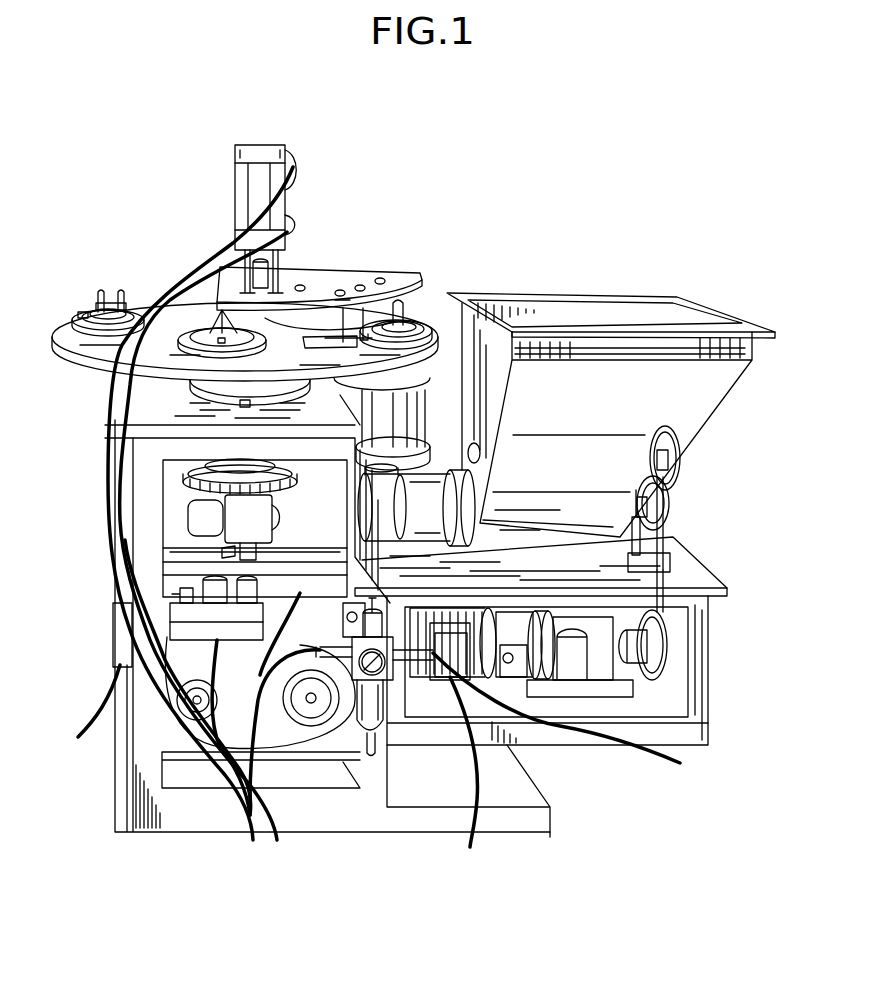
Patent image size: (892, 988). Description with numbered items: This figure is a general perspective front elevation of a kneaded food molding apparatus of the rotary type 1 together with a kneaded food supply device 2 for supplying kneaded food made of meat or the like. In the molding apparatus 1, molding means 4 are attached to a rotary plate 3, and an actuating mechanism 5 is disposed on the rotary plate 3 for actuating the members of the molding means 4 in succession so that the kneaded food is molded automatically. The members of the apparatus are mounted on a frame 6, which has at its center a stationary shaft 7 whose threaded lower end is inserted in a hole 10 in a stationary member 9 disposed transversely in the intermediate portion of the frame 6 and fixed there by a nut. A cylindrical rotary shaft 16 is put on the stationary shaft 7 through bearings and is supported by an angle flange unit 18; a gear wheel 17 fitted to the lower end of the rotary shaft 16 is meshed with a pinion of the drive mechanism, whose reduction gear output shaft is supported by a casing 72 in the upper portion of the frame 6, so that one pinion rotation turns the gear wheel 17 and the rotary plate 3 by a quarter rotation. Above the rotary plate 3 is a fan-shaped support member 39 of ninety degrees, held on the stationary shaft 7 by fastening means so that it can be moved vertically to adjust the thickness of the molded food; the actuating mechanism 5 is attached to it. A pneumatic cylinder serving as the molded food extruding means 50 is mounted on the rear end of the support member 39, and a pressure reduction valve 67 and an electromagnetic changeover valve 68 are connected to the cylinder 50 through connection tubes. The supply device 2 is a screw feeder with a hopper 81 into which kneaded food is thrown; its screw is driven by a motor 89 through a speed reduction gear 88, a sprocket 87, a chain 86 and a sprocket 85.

The kneaded food molding apparatus of the rotary type 1 is at (382, 235).
The kneaded food supply device 2 is at (632, 283).
The rotary plate 3 is at (62, 318).
The molding means 4 is at (112, 300).
The actuating mechanism 5 is at (410, 326).
The frame 6 is at (140, 745).
The stationary shaft 7 is at (230, 552).
The stationary member 9 is at (180, 550).
The hole 10 is at (291, 520).
The rotary shaft 16 is at (245, 517).
The gear wheel 17 is at (190, 478).
The angle flange unit 18 is at (232, 393).
The support member 39 is at (322, 262).
The molded food extruding means 50 is at (218, 193).
The pressure reduction valve 67 is at (377, 713).
The electromagnetic changeover valve 68 is at (220, 627).
The casing 72 is at (322, 655).
The hopper 81 is at (688, 385).
The sprocket 85 is at (665, 517).
The chain 86 is at (665, 558).
The sprocket 87 is at (655, 672).
The speed reduction gear 88 is at (595, 660).
The motor 89 is at (527, 637).